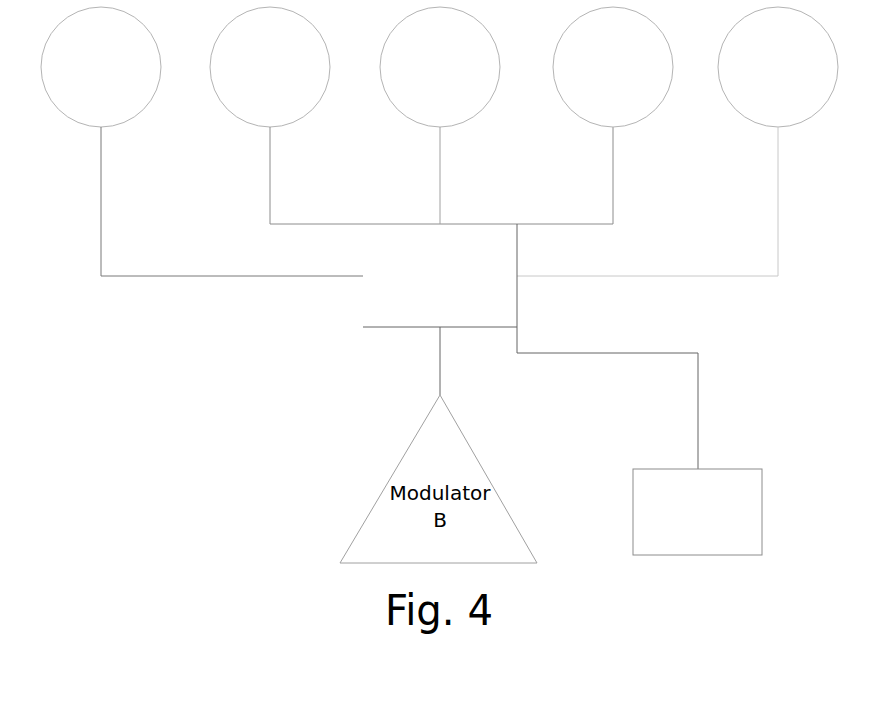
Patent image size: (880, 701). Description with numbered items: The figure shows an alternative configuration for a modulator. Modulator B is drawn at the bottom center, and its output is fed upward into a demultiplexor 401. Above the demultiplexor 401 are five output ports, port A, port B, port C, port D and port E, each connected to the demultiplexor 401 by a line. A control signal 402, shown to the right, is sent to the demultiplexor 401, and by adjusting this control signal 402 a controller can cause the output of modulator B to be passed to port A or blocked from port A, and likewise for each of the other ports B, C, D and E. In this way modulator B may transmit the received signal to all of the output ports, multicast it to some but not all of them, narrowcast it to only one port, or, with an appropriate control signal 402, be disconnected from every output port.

The demultiplexor 401 is at (530, 346).
The control signal 402 is at (697, 512).
The port A is at (202, 141).
The modulator B is at (411, 115).
The port C is at (440, 115).
The port D is at (613, 67).
The port E is at (677, 141).